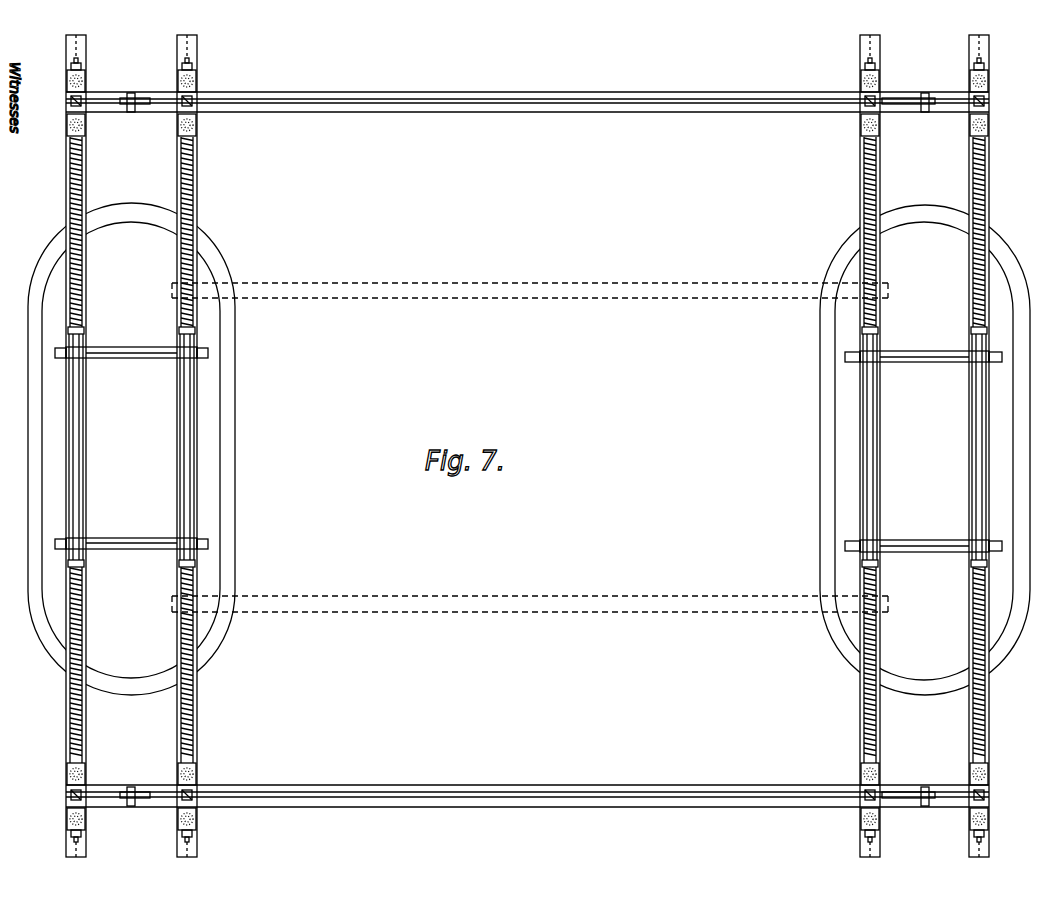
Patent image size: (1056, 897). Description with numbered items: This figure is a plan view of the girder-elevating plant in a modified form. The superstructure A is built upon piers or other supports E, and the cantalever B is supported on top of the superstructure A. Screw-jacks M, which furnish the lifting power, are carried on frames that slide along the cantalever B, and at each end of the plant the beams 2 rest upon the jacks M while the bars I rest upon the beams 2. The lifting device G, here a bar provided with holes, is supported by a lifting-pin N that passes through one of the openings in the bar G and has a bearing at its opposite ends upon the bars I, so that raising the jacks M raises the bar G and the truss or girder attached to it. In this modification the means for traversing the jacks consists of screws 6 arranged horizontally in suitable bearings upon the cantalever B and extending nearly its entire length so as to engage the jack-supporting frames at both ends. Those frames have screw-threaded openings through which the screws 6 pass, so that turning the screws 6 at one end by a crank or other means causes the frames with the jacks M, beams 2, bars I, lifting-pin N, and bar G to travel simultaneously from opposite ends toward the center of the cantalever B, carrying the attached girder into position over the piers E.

The piers E is at (529, 449).
The screws 6 is at (84, 212).
The cantalever B is at (177, 403).
The superstructure A is at (135, 360).
The screw-jacks M is at (196, 78).
The beams 2 is at (198, 86).
The bars I is at (200, 95).
The lifting device G is at (130, 97).
The lifting-pin N is at (140, 97).